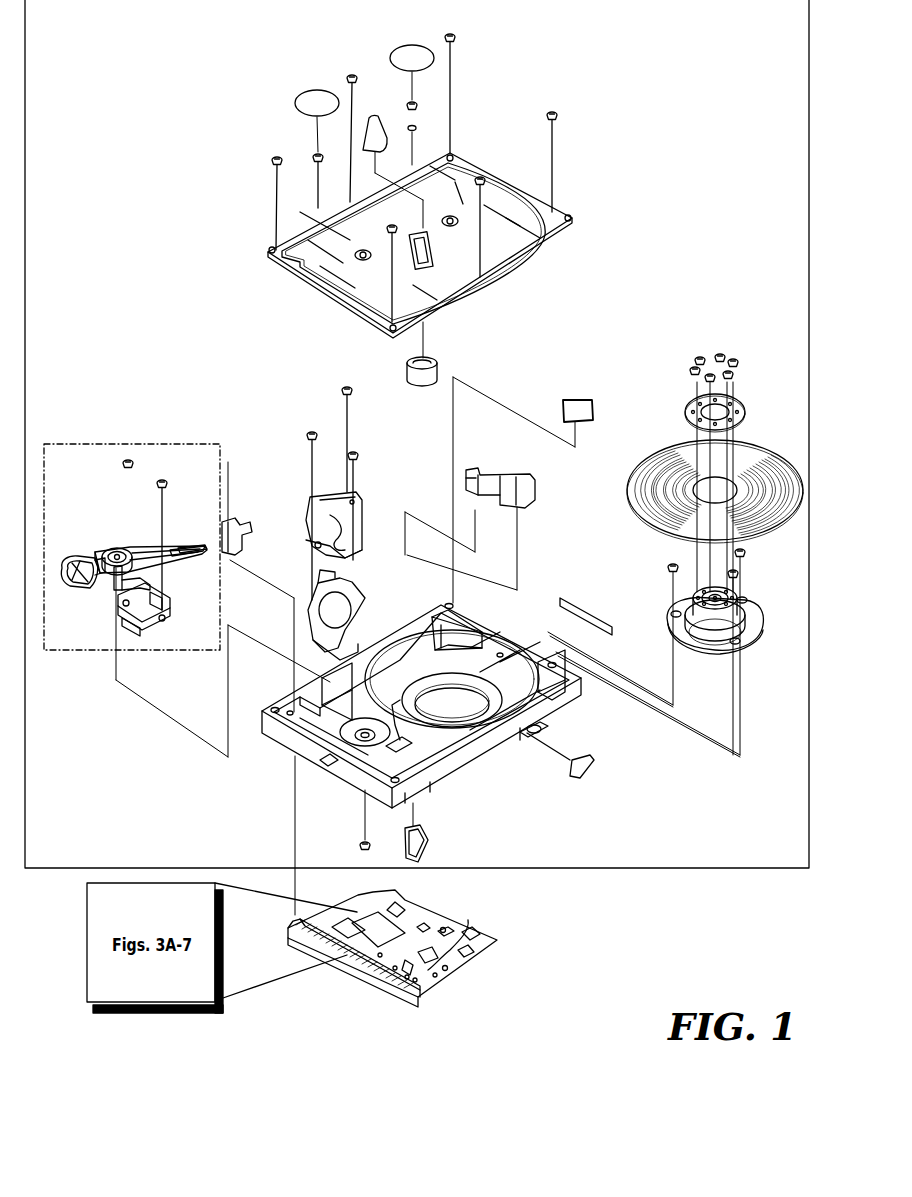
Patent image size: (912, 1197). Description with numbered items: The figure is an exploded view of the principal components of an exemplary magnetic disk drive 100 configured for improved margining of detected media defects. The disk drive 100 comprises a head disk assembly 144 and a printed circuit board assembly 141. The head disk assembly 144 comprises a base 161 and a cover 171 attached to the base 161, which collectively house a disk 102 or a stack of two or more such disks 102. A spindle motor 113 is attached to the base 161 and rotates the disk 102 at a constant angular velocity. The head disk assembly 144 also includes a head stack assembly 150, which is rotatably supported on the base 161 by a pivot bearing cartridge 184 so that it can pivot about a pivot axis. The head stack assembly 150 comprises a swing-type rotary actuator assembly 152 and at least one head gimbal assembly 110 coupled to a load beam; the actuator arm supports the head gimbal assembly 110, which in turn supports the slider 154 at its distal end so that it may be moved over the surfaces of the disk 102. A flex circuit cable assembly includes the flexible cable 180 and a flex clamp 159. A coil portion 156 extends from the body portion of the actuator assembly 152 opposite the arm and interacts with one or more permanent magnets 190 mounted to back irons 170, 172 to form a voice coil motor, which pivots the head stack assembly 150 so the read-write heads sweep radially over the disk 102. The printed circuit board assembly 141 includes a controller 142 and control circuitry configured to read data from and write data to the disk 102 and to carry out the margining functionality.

The magnetic disk drive 100 is at (665, 892).
The disk 102 is at (653, 457).
The head gimbal assembly 110 is at (175, 548).
The spindle motor 113 is at (658, 593).
The printed circuit board assembly 141 is at (392, 948).
The controller 142 is at (382, 930).
The head disk assembly 144 is at (570, 869).
The head stack assembly 150 is at (132, 529).
The rotary actuator assembly 152 is at (137, 545).
The slider 154 is at (200, 543).
The coil portion 156 is at (65, 585).
The flex clamp 159 is at (174, 604).
The base 161 is at (470, 778).
The back iron 170 is at (308, 527).
The cover 171 is at (538, 247).
The back iron 172 is at (362, 593).
The flexible cable 180 is at (150, 586).
The pivot bearing cartridge 184 is at (103, 545).
The permanent magnet 190 is at (328, 615).